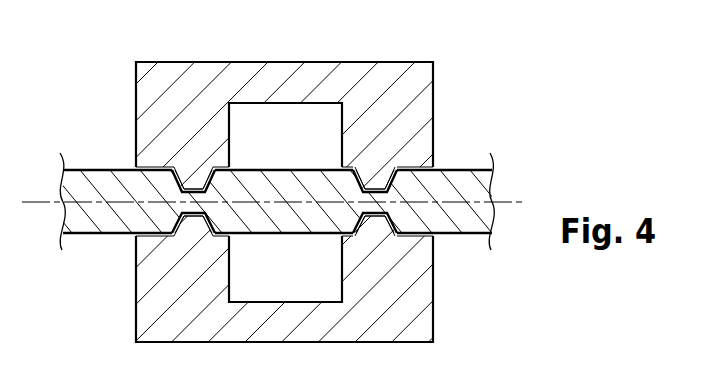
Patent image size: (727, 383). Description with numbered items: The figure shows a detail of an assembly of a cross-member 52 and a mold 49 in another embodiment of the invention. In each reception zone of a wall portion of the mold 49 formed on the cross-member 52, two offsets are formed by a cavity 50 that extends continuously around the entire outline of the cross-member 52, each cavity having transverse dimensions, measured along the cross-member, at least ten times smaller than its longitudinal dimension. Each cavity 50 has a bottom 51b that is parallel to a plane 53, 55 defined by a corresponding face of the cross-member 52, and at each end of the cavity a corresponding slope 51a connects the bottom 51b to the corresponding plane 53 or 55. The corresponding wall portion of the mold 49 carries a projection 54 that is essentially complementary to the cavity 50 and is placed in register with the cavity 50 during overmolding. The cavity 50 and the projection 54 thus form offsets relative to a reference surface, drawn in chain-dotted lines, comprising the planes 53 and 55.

The mold 49 is at (126, 55).
The cavity 50 is at (374, 188).
The slope 51a is at (358, 170).
The bottom 51b is at (181, 172).
The cross-member 52 is at (290, 224).
The plane 53 is at (466, 158).
The projection 54 is at (203, 170).
The plane 55 is at (475, 242).